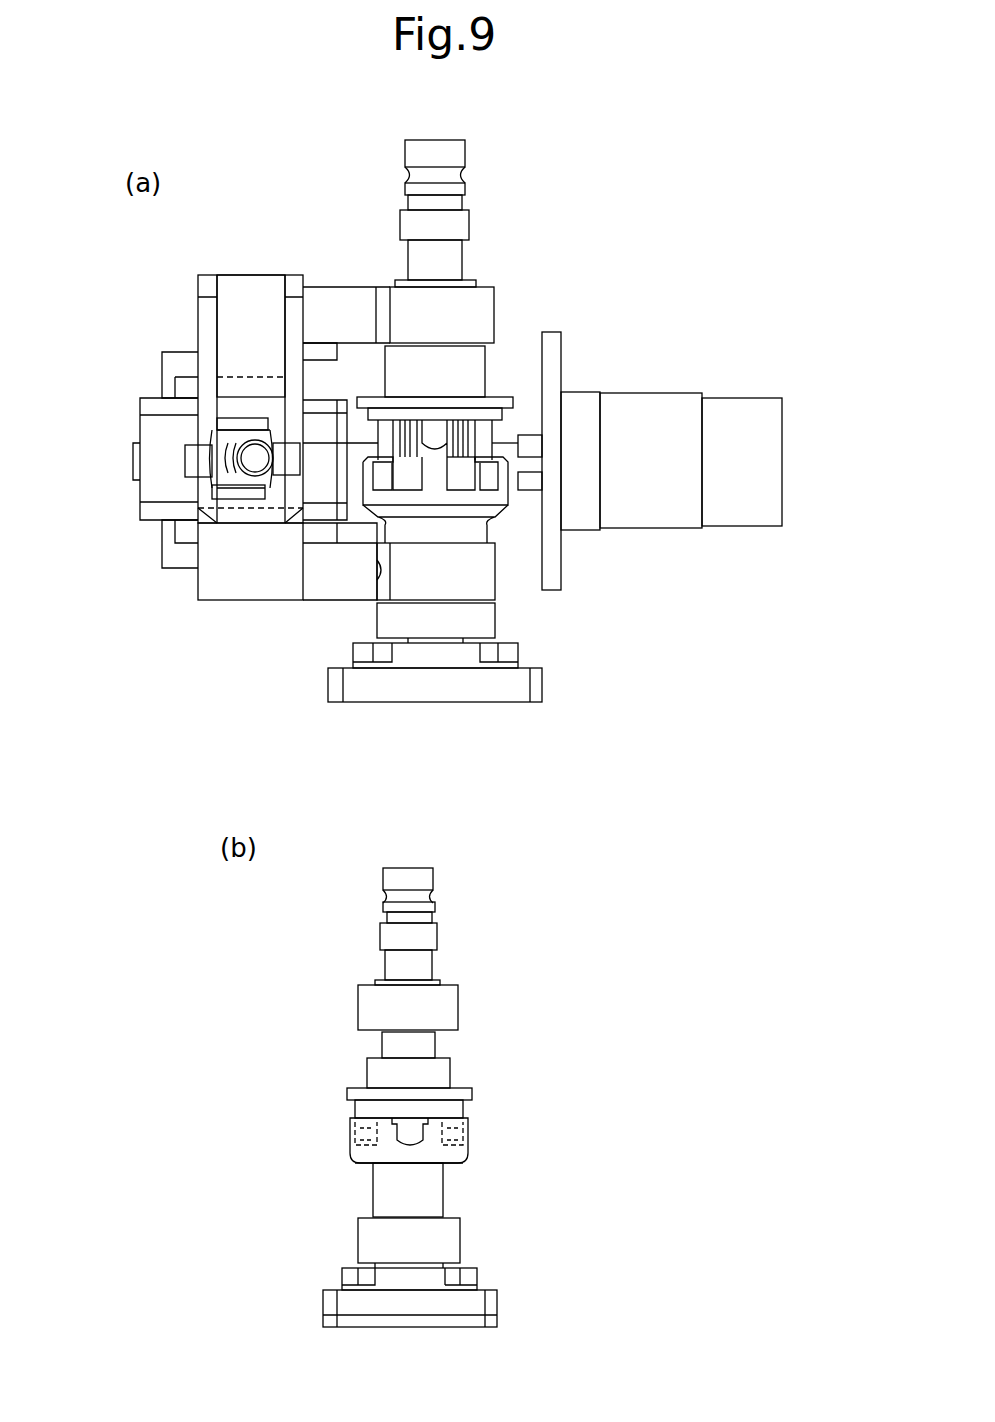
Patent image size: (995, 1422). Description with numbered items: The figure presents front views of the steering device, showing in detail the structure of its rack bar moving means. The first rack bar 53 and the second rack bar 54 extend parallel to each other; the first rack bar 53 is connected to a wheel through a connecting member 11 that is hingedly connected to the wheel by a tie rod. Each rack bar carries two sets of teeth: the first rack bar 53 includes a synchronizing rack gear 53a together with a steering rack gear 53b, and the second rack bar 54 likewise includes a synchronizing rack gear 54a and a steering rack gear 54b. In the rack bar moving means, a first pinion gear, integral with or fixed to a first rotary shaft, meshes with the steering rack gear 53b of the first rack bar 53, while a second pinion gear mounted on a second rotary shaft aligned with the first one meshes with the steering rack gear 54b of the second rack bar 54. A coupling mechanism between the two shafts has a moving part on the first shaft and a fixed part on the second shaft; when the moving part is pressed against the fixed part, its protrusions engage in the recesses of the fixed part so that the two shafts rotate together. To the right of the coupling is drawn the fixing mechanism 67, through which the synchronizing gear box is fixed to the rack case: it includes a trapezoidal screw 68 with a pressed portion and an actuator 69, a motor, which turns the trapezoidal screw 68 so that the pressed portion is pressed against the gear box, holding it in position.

The connecting member 11 is at (240, 457).
The first rack bar 53 is at (258, 305).
The synchronizing rack gear 53a is at (217, 392).
The steering rack gear 53b is at (380, 290).
The second rack bar 54 is at (248, 573).
The synchronizing rack gear 54a is at (205, 500).
The steering rack gear 54b is at (378, 607).
The fixing mechanism 67 is at (671, 448).
The trapezoidal screw 68 is at (530, 458).
The actuator (motor) 69 is at (660, 490).